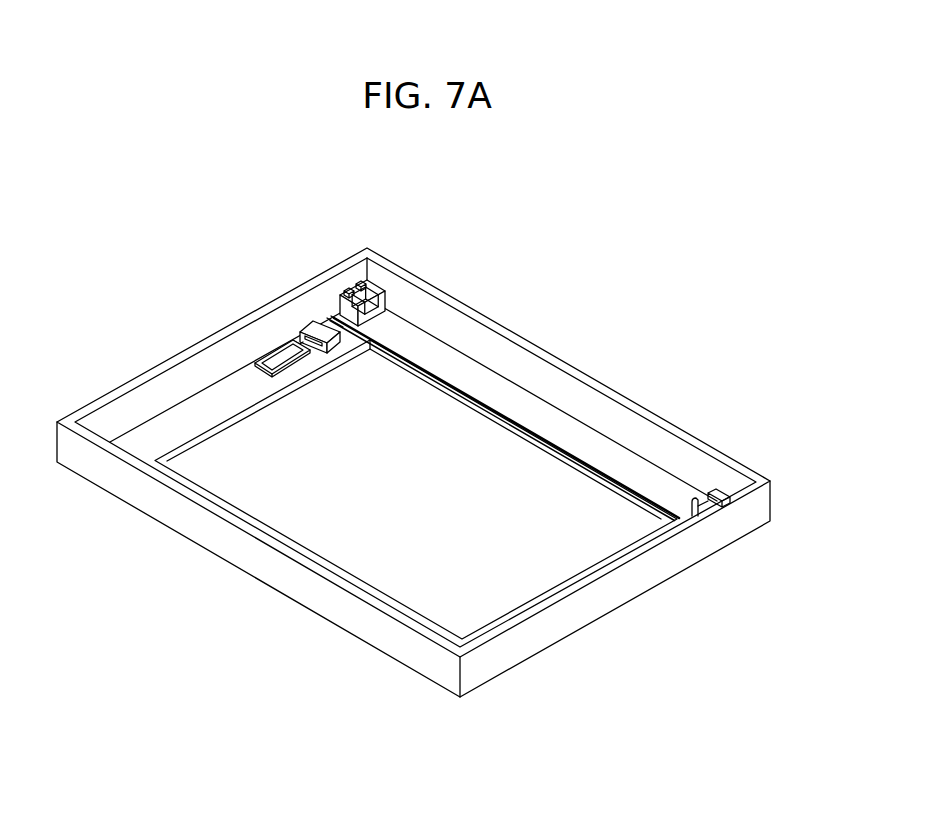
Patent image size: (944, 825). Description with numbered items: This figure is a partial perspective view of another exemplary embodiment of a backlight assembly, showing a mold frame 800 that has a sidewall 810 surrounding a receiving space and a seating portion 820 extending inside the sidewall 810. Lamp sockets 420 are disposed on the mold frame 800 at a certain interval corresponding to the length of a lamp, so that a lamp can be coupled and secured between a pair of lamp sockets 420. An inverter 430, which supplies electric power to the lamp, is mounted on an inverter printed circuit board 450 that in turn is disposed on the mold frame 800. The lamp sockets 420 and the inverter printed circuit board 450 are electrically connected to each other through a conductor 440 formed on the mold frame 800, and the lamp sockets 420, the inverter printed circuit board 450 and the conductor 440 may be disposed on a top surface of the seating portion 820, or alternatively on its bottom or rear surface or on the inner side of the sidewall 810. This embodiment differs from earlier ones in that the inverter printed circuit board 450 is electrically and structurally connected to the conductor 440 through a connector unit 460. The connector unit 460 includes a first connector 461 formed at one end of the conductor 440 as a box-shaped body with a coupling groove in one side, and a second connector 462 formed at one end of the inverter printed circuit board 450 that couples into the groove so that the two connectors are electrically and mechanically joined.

The lamp socket 420 is at (387, 303).
The inverter 430 is at (252, 341).
The conductor 440 is at (513, 423).
The inverter printed circuit board 450 is at (255, 363).
The connector unit 460 is at (320, 201).
The first connector 461 is at (318, 321).
The second connector 462 is at (297, 343).
The mold frame 800 is at (424, 429).
The sidewall 810 is at (668, 557).
The seating portion 820 is at (188, 413).